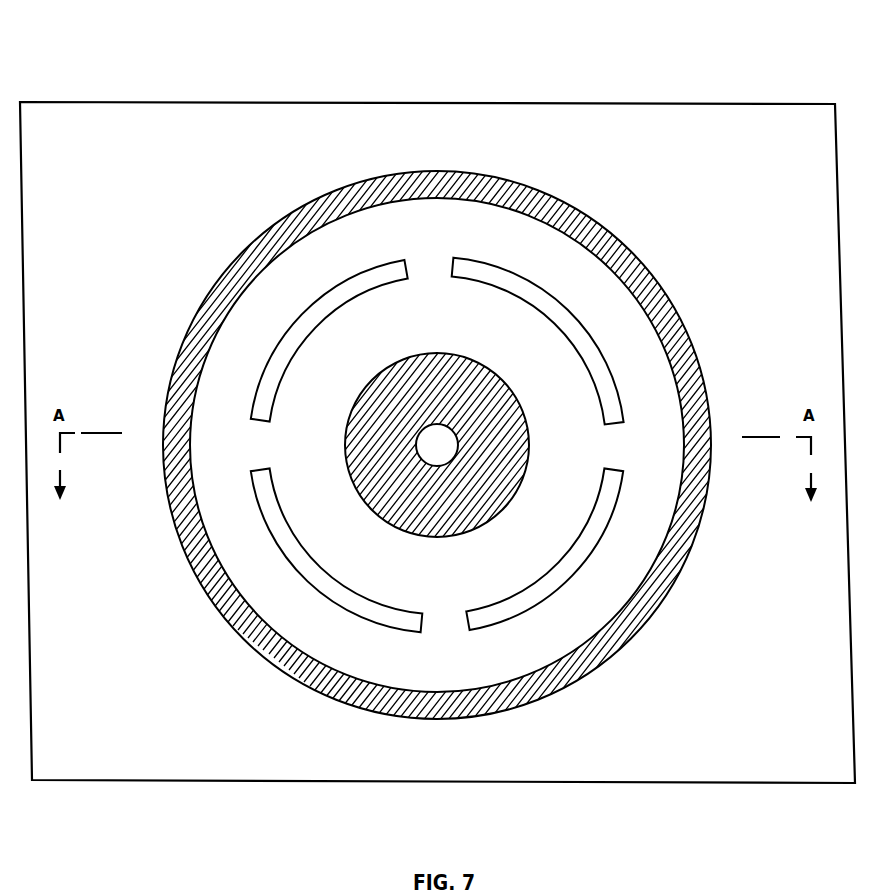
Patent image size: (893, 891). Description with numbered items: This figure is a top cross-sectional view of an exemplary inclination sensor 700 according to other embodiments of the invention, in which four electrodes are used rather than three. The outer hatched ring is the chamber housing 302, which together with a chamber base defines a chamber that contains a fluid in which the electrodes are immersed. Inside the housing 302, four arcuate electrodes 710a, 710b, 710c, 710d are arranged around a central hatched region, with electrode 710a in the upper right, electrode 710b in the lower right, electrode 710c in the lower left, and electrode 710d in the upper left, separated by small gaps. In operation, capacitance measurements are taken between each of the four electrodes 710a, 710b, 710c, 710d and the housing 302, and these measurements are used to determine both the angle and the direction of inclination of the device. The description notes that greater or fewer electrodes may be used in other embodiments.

The inclination sensor 700 is at (584, 67).
The chamber housing 302 is at (638, 266).
The electrode 710a is at (540, 312).
The electrode 710b is at (567, 556).
The electrode 710c is at (318, 556).
The electrode 710d is at (330, 308).